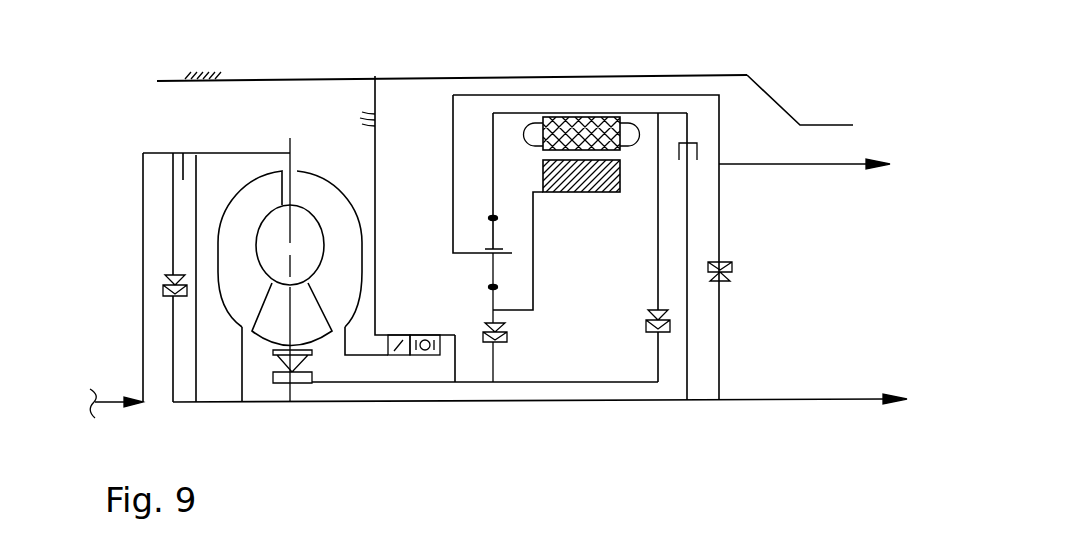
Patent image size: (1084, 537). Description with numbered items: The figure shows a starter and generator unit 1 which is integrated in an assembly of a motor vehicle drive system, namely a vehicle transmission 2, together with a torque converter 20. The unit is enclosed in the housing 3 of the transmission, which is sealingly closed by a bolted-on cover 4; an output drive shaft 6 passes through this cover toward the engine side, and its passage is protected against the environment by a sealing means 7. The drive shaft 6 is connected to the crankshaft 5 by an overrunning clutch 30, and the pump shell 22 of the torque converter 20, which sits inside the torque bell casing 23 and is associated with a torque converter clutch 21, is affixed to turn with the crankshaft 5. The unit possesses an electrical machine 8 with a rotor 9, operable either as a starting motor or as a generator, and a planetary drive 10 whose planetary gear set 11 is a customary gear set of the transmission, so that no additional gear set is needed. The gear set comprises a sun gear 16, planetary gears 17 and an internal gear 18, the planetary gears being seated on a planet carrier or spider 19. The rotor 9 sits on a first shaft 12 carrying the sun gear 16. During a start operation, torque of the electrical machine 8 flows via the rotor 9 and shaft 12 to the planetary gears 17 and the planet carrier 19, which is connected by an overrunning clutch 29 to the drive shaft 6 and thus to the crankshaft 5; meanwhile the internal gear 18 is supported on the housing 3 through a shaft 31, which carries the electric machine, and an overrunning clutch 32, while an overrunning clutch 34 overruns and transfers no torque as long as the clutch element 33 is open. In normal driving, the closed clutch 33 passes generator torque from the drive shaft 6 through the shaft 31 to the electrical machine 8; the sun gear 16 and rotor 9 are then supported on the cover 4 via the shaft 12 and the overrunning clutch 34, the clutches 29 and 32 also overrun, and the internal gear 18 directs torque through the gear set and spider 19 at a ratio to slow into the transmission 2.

The starter and generator unit 1 is at (590, 110).
The vehicle transmission 2 is at (846, 311).
The housing 3 is at (770, 91).
The cover of housing 4 is at (375, 150).
The crankshaft 5 is at (101, 402).
The drive shaft 6 is at (266, 403).
The sealing means 7 is at (393, 352).
The electrical machine 8 is at (571, 131).
The rotor of electrical machine 9 is at (600, 192).
The planetary drive 10 is at (453, 130).
The planetary gear set 11 is at (491, 272).
The shaft connected to rotor 12 is at (535, 213).
The sun gear 16 is at (493, 300).
The planetary gear 17 is at (492, 220).
The internal gear 18 is at (493, 184).
The planet carrier, spider 19 is at (453, 183).
The torque converter 20 is at (265, 198).
The torque converter clutch 21 is at (177, 150).
The pump shell of the torque converter 22 is at (313, 190).
The torque bell casing 23 is at (260, 79).
The overrunning clutch 29 is at (732, 266).
The overrunning clutch 30 is at (163, 279).
The shaft 31 is at (505, 113).
The overrunning clutch 32 is at (648, 322).
The clutch 33 is at (700, 149).
The overrunning clutch 34 is at (507, 336).